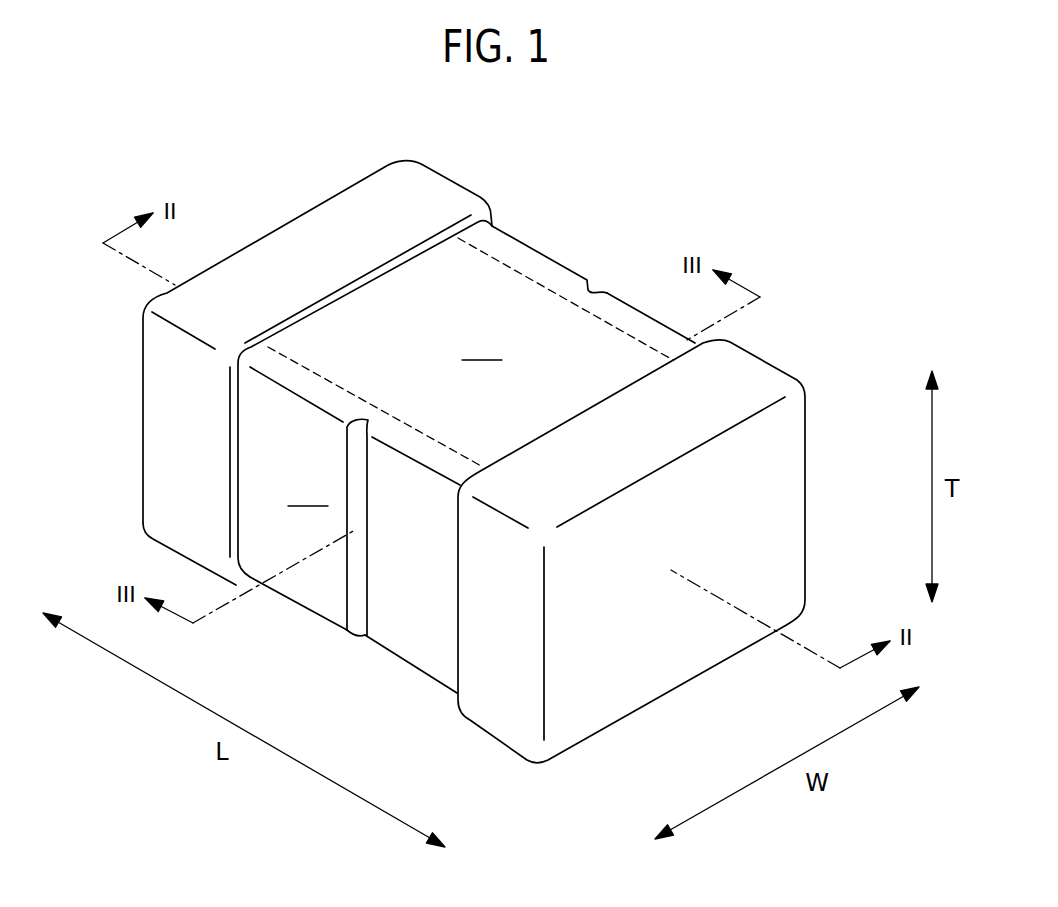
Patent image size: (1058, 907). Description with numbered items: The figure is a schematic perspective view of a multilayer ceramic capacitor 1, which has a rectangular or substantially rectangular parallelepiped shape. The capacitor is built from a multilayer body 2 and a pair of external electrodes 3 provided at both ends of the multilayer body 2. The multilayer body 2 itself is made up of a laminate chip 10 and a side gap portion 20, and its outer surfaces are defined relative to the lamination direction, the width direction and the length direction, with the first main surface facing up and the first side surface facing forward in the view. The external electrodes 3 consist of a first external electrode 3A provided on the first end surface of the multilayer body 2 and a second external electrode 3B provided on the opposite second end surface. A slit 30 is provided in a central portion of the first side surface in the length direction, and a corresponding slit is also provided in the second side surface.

The multilayer ceramic capacitor 1 is at (840, 226).
The multilayer body 2 is at (470, 303).
The external electrodes 3 is at (486, 430).
The first external electrode 3A is at (410, 190).
The second external electrode 3B is at (758, 377).
The laminate chip 10 is at (388, 310).
The side gap portion 20 is at (607, 293).
The slit 30 is at (358, 612).